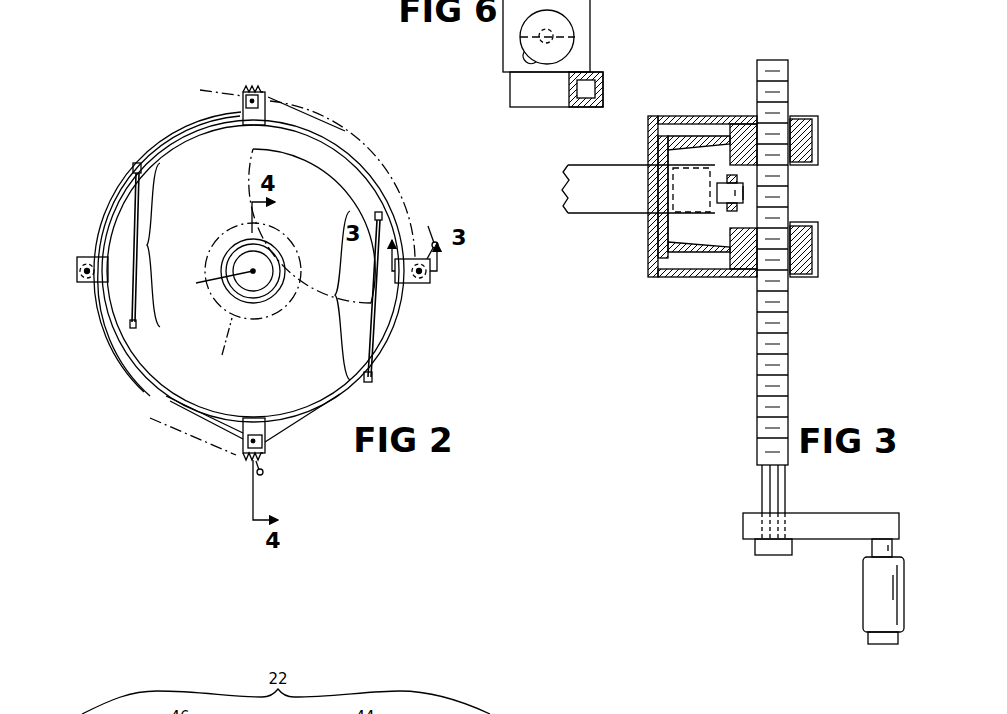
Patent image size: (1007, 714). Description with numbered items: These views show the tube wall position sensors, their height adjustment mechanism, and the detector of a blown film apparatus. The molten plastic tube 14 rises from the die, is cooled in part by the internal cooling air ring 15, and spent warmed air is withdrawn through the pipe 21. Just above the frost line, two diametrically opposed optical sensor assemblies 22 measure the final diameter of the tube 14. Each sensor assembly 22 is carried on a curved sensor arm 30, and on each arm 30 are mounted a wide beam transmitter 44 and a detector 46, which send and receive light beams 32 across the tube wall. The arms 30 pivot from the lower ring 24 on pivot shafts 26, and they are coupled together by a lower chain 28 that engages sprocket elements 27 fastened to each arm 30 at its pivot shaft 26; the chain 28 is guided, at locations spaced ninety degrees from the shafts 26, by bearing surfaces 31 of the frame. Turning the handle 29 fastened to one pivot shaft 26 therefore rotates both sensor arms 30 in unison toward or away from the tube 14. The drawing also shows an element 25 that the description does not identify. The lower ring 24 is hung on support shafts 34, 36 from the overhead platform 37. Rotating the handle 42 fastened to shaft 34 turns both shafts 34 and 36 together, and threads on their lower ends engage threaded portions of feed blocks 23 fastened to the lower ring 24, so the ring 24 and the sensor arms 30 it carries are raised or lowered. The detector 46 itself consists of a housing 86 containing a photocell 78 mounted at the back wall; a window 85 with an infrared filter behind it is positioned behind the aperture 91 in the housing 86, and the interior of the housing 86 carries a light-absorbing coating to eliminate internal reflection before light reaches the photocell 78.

In FIG. 2, the molten plastic tube 14 is at (150, 342).
In FIG. 2, the internal cooling air ring 15 is at (283, 291).
In FIG. 2, the pipe 21 is at (265, 300).
In FIG. 2, the optical sensor assembly 22 is at (256, 271).
In FIG. 2, the feed block 23 is at (77, 264).
In FIG. 3, the feed block 23 is at (820, 115).
In FIG. 2, the lower ring 24 is at (156, 392).
In FIG. 3, the lower ring 24 is at (607, 213).
In FIG. 2, the top bracket 25 is at (253, 115).
In FIG. 2, the pivot shaft 26 is at (240, 95).
In FIG. 2, the sprocket element 27 is at (263, 88).
In FIG. 2, the lower chain 28 is at (318, 112).
In FIG. 3, the lower chain 28 is at (745, 192).
In FIG. 2, the handle 29 is at (264, 473).
In FIG. 2, the curved sensor arm 30 is at (119, 228).
In FIG. 6, the curved sensor arm 30 is at (540, 98).
In FIG. 2, the bearing surface 31 is at (133, 375).
In FIG. 3, the bearing surface 31 is at (722, 215).
In FIG. 2, the light beam 32 is at (132, 212).
In FIG. 2, the support shaft 34 is at (82, 283).
In FIG. 3, the support shaft 34 is at (788, 362).
In FIG. 2, the support shaft 36 is at (428, 283).
In FIG. 3, the overhead platform 37 is at (800, 147).
In FIG. 2, the handle 42 is at (423, 234).
In FIG. 3, the handle 42 is at (870, 574).
In FIG. 2, the wide beam transmitter 44 is at (133, 163).
In FIG. 2, the detector 46 is at (130, 325).
In FIG. 6, the detector 46 is at (596, 23).
In FIG. 6, the photocell 78 is at (505, 37).
In FIG. 6, the window 85 is at (560, 48).
In FIG. 6, the housing 86 is at (580, 37).
In FIG. 6, the aperture 91 is at (528, 56).